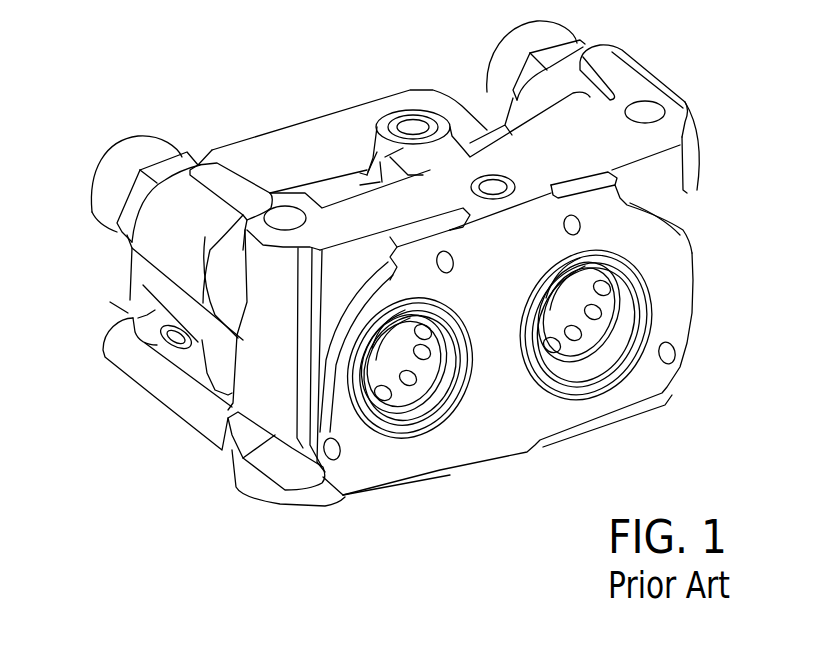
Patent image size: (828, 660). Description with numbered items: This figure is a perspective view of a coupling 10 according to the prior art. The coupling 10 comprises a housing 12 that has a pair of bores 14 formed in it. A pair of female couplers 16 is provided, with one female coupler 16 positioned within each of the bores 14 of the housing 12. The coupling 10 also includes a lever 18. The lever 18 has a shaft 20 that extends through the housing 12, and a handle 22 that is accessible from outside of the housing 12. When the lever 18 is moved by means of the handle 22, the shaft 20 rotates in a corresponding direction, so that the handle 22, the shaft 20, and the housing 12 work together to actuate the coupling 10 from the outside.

The coupling 10 is at (400, 280).
The housing 12 is at (665, 190).
The bores 14 is at (415, 403).
The female couplers 16 is at (383, 405).
The lever 18 is at (155, 396).
The shaft 20 is at (133, 318).
The handle 22 is at (195, 417).